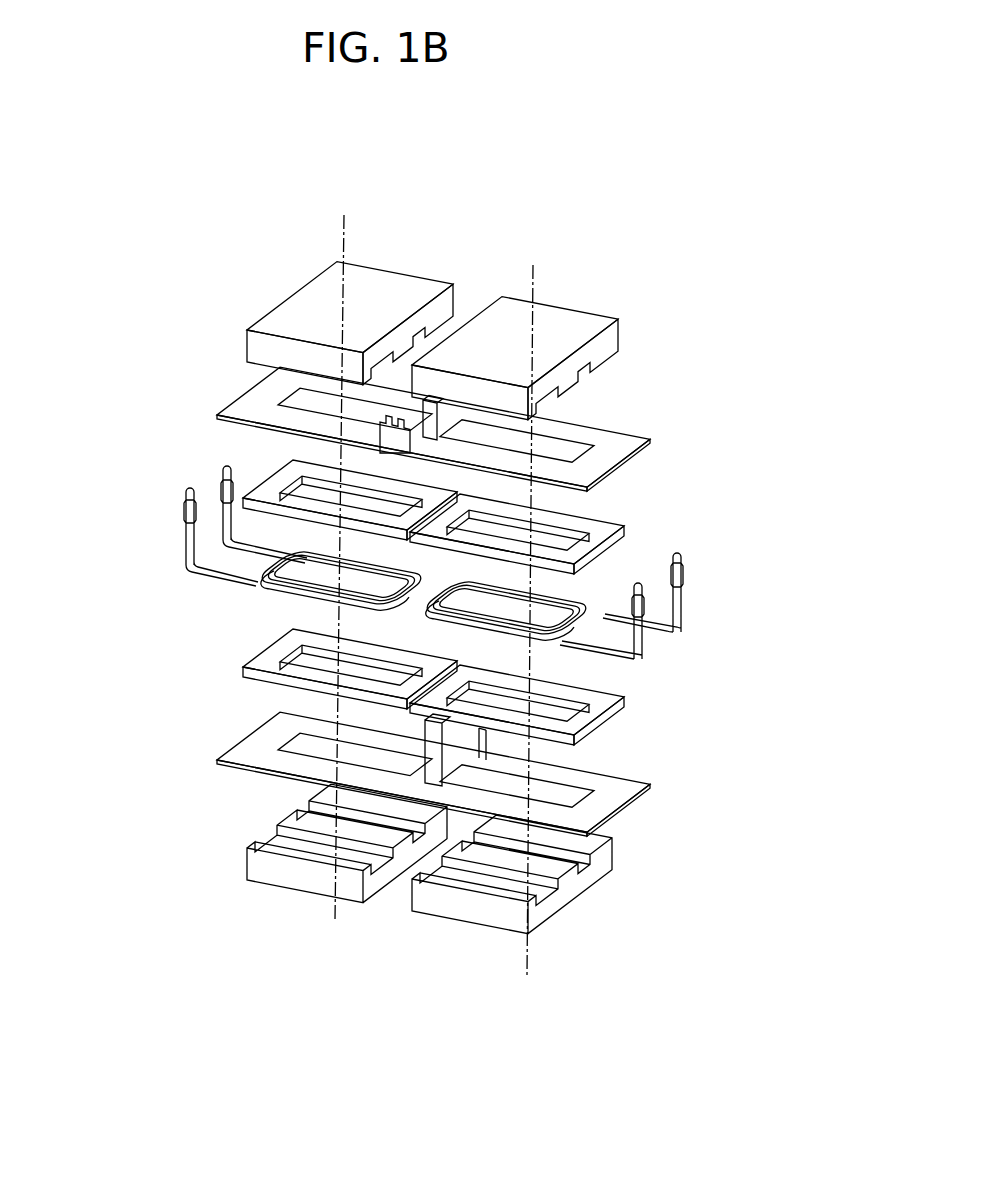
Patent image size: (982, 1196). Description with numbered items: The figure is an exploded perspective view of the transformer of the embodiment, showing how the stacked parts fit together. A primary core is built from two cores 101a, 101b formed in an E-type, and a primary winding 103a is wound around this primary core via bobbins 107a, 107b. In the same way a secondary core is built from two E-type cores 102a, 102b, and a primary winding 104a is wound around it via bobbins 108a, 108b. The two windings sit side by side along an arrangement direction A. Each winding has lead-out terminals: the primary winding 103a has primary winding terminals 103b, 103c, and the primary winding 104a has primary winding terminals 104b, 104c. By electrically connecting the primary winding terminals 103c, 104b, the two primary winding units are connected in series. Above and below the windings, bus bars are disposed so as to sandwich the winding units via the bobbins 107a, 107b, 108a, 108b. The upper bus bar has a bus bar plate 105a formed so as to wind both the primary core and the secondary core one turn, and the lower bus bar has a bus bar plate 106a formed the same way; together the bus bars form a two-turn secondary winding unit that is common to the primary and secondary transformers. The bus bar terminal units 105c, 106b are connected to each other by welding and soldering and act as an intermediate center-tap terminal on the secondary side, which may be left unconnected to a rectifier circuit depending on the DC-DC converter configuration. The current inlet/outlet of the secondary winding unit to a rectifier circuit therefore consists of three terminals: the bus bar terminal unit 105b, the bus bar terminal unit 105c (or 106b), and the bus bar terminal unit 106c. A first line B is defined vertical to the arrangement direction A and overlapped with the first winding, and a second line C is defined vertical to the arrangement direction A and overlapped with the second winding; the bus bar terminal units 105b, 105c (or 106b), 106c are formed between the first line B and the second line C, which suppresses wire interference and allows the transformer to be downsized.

The core 101a is at (353, 318).
The core 101b is at (303, 865).
The core 102a is at (523, 337).
The core 102b is at (527, 905).
The primary winding 103a is at (263, 583).
The primary winding terminal 103b is at (218, 478).
The primary winding terminal 103c is at (185, 517).
The primary winding 104a is at (680, 558).
The primary winding terminal 104b is at (682, 575).
The primary winding terminal 104c is at (657, 647).
The bus bar plate 105a is at (255, 410).
The bus bar terminal unit 105b is at (400, 437).
The bus bar terminal unit 105c is at (433, 402).
The bus bar plate 106a is at (218, 762).
The bus bar terminal unit 106b is at (438, 770).
The bus bar terminal unit 106c is at (485, 740).
The bobbin 107a is at (283, 490).
The bobbin 107b is at (268, 665).
The bobbin 108a is at (593, 510).
The bobbin 108b is at (590, 702).
The arrangement direction A is at (660, 650).
The first line B is at (344, 247).
The second line C is at (533, 287).